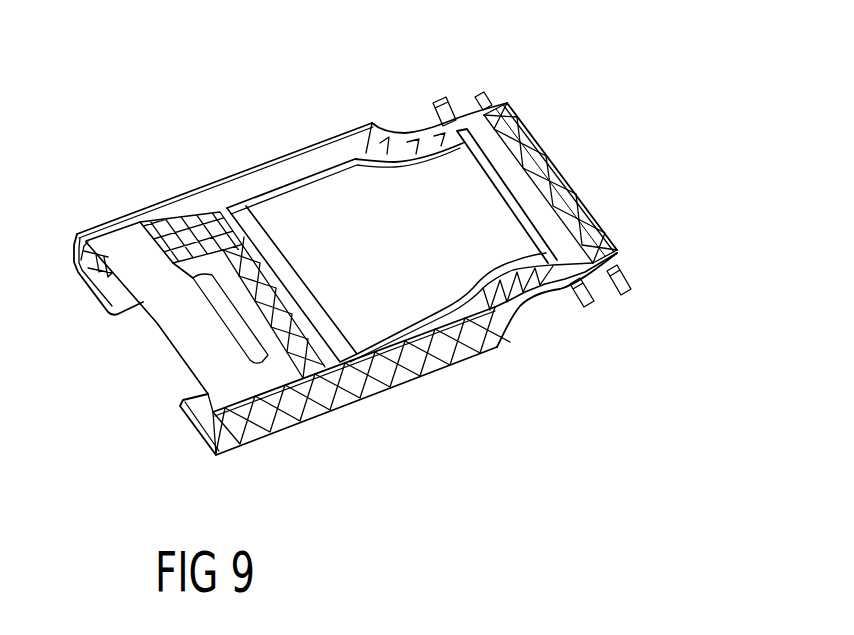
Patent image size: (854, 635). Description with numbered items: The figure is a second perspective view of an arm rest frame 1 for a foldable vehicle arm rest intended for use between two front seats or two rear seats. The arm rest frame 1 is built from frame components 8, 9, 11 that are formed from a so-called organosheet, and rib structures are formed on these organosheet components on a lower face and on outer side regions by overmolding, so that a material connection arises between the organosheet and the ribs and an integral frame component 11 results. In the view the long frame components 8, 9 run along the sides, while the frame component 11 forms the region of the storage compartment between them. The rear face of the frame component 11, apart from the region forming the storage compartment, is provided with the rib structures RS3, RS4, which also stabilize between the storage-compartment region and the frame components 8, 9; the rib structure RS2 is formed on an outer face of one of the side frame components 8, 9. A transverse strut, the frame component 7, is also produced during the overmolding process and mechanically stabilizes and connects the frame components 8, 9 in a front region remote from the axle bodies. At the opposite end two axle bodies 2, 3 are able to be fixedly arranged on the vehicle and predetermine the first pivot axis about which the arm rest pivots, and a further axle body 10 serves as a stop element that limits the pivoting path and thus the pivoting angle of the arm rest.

The arm rest frame 1 is at (145, 147).
The axle body 2 is at (440, 98).
The axle body 3 is at (594, 306).
The frame component 7 is at (170, 334).
The frame component 8 is at (510, 334).
The frame component 9 is at (293, 148).
The axle body 10 is at (632, 266).
The frame component 11 is at (363, 193).
The rib structure RS2 is at (430, 370).
The rib structure RS3 is at (216, 222).
The rib structure RS4 is at (538, 160).